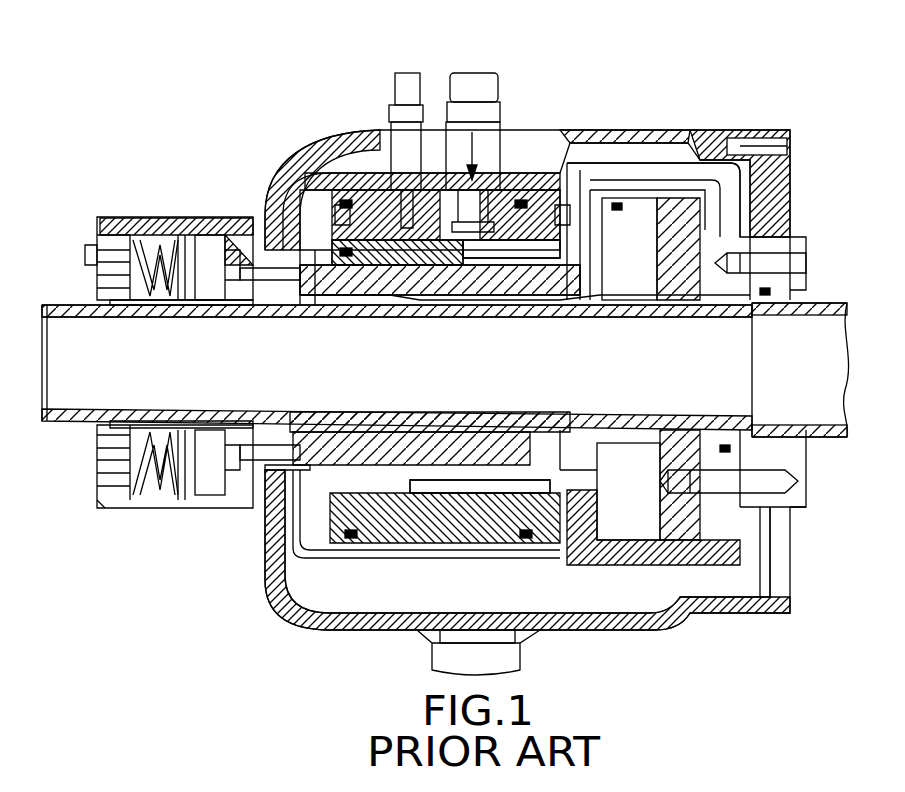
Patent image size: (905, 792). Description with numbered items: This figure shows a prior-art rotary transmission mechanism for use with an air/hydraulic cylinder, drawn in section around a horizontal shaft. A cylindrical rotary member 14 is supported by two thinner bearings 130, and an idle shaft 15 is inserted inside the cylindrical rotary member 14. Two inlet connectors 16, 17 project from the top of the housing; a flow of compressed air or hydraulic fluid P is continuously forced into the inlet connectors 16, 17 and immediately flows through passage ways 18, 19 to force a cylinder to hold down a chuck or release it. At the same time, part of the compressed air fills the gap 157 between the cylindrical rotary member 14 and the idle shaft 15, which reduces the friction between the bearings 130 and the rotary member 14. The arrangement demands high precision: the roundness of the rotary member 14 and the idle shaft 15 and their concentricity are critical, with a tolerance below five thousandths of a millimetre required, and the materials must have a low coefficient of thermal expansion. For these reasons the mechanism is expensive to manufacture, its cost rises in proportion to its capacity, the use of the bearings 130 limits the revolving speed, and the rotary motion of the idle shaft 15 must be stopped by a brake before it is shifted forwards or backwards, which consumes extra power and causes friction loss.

The cylindrical rotary member 14 is at (377, 243).
The idle shaft 15 is at (397, 250).
The gap 157 is at (447, 250).
The inlet connector 16 is at (407, 73).
The inlet connector 17 is at (470, 73).
The passage way 18 is at (525, 490).
The passage way 19 is at (544, 150).
The thinner bearing 130 is at (337, 222).
The flow of compressed air P is at (474, 152).